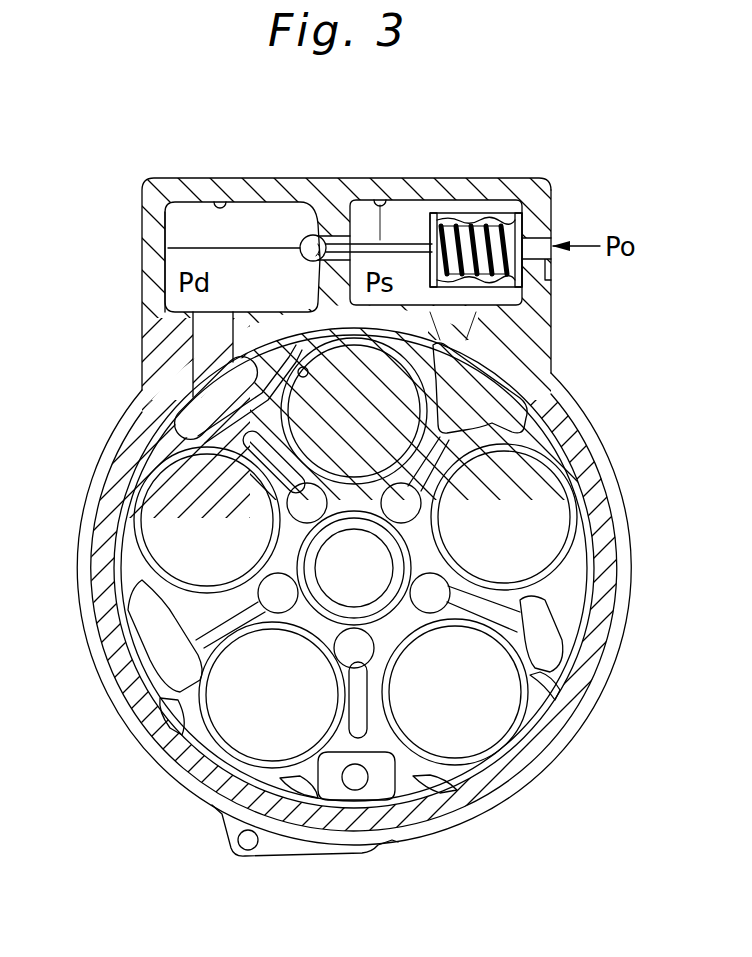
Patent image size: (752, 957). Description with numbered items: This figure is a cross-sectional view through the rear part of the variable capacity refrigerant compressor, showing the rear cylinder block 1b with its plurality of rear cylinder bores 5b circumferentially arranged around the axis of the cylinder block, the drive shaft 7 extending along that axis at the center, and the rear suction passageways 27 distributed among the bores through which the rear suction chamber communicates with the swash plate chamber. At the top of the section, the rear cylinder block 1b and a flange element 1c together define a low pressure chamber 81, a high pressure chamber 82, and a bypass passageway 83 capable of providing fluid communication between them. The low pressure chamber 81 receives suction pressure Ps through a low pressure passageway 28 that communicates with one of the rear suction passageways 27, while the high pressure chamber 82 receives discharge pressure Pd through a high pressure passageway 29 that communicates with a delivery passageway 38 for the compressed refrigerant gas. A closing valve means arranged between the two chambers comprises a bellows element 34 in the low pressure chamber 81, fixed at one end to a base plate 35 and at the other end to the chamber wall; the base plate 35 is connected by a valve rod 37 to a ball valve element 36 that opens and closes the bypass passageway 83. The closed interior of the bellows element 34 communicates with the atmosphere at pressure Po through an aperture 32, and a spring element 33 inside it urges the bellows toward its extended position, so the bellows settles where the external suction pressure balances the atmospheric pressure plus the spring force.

The rear cylinder block 1b is at (552, 357).
The flange element 1c is at (548, 193).
The high pressure passageway 29 is at (143, 346).
The high pressure chamber 82 is at (214, 205).
The ball valve element 36 is at (280, 203).
The bypass passageway 83 is at (305, 240).
The valve rod 37 is at (408, 197).
The low pressure chamber 81 is at (361, 195).
The bellows element 34 is at (462, 214).
The base plate 35 is at (443, 205).
The spring element 33 is at (497, 220).
The aperture 32 is at (550, 272).
The low pressure passageway 28 is at (470, 333).
The delivery passageway 38 is at (202, 424).
The rear cylinder bores 5b is at (300, 365).
The drive shaft 7 is at (362, 583).
The rear suction passageways 27 is at (310, 488).